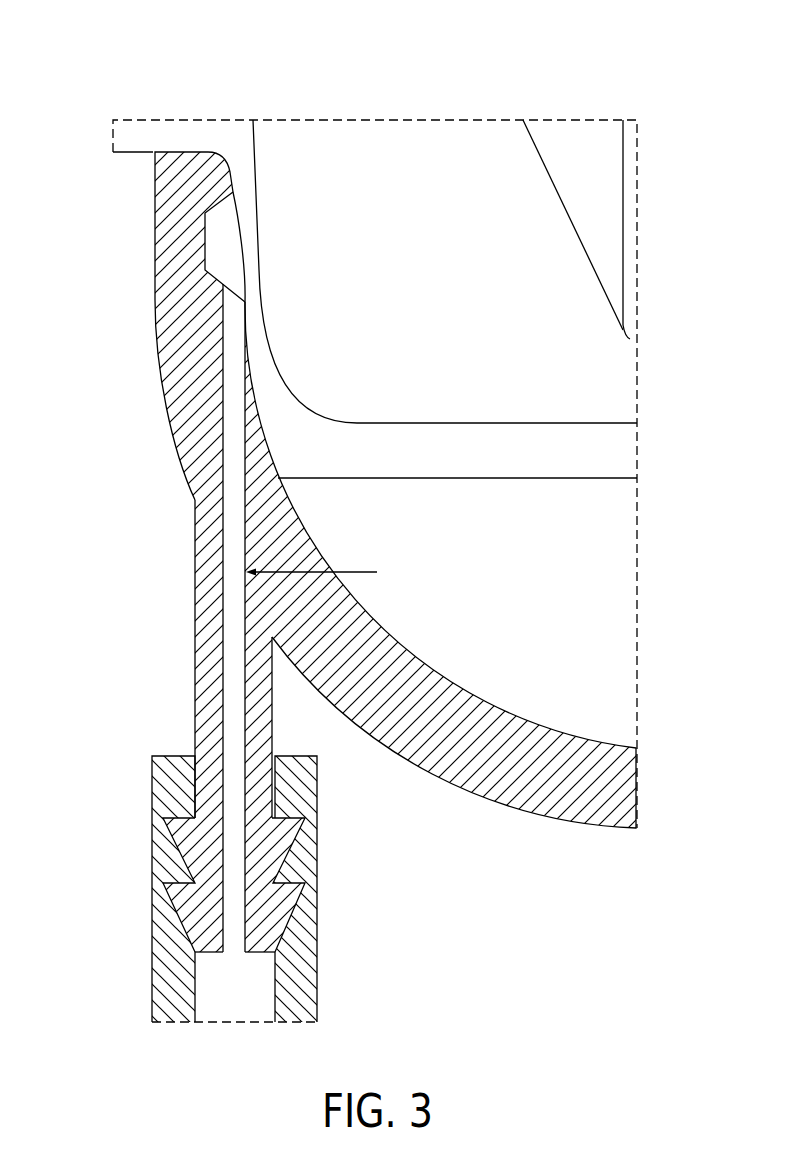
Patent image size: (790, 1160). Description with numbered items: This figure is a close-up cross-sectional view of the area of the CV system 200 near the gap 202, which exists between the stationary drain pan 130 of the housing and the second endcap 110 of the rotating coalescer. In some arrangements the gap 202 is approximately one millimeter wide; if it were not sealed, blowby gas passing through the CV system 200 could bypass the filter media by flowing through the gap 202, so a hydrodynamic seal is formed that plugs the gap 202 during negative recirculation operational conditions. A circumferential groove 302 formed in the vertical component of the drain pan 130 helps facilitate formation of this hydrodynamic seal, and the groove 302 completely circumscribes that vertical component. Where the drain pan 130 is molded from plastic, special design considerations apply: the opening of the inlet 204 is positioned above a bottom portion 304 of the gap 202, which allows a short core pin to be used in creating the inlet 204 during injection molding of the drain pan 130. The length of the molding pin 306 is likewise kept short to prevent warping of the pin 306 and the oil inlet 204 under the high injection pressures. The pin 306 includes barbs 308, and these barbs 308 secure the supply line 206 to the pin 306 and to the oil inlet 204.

The second endcap 110 is at (580, 298).
The CV system 200 is at (158, 66).
The drain pan 130 is at (175, 305).
The gap 202 is at (236, 155).
The circumferential groove 302 is at (222, 253).
The inlet 204 is at (232, 420).
The bottom portion 304 is at (258, 382).
The pin 306 is at (207, 663).
The barbs 308 is at (183, 828).
The supply line 206 is at (300, 988).